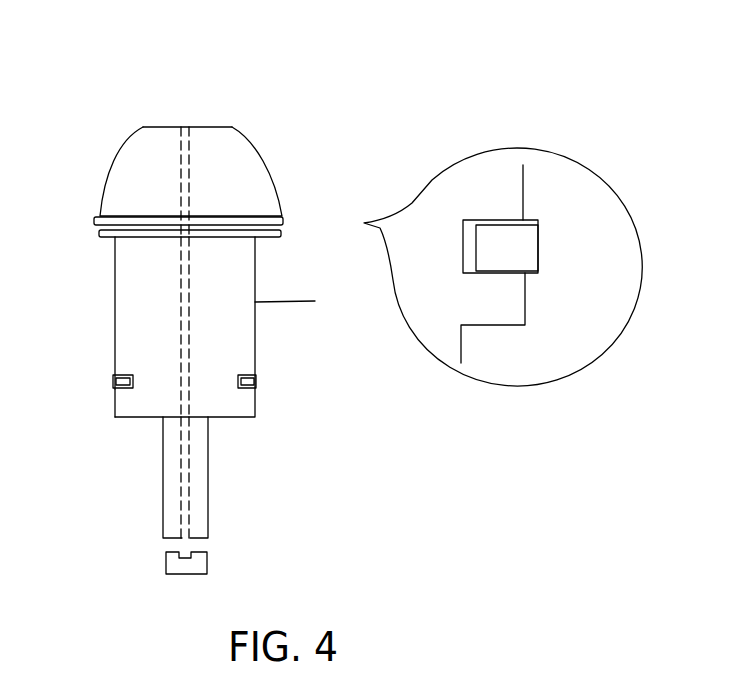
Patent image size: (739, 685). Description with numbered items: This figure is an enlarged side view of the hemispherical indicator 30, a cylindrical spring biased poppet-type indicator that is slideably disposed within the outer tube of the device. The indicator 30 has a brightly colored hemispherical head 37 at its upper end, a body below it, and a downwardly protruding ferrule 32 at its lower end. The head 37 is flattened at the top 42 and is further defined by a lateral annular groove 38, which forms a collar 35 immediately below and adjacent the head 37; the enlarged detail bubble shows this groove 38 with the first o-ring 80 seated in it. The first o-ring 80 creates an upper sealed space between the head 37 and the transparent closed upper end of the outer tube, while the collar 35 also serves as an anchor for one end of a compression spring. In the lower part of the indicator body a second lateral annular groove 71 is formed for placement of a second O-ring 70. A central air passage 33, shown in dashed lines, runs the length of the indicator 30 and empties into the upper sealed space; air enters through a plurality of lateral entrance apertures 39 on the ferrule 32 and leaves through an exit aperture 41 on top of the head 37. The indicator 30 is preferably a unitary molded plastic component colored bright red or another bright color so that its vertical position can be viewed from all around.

The indicator 30 is at (92, 50).
The ferrule 32 is at (202, 475).
The central air passage 33 is at (186, 357).
The collar 35 is at (283, 234).
The hemispherical head 37 is at (257, 145).
The lateral annular groove 38 is at (470, 242).
The lateral entrance apertures 39 is at (208, 543).
The exit aperture 41 is at (187, 127).
The top 42 is at (158, 124).
The second O-ring 70 is at (117, 384).
The second lateral annular groove 71 is at (125, 393).
The first o-ring 80 is at (280, 223).